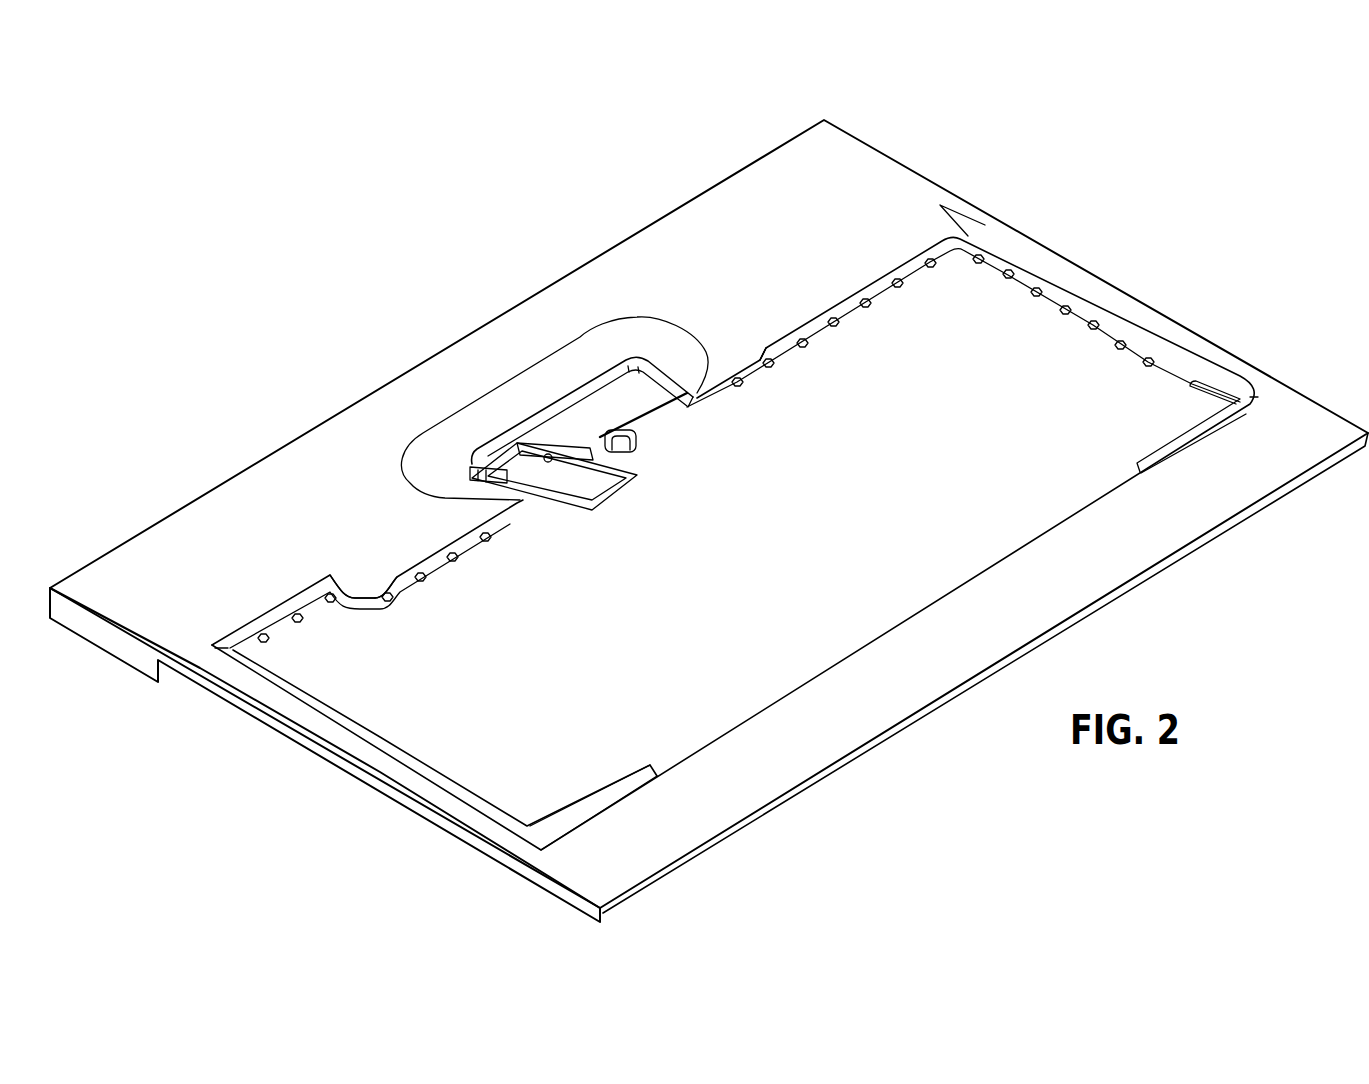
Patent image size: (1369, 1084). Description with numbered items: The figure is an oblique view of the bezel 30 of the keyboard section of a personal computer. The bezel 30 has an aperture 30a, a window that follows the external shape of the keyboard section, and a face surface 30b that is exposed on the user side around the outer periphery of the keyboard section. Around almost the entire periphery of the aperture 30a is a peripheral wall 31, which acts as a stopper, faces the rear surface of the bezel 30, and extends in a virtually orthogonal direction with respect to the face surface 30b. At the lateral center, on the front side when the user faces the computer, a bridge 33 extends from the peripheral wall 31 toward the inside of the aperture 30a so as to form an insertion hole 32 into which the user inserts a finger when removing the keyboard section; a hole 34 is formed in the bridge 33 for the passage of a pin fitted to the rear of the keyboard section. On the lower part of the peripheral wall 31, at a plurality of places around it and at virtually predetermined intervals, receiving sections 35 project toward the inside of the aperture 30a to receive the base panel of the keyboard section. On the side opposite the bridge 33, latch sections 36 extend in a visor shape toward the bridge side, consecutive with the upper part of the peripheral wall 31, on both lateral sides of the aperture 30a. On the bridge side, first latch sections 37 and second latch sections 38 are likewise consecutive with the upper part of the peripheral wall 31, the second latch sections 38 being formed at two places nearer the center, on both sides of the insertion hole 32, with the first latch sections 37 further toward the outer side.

The bezel 30 is at (858, 154).
The aperture 30a is at (878, 640).
The face surface 30b is at (683, 223).
The peripheral wall 31 is at (717, 390).
The insertion hole 32 is at (567, 433).
The bridge 33 is at (663, 413).
The hole 34 is at (607, 425).
The receiving sections 35 is at (928, 265).
The latch sections 36 is at (1137, 470).
The first latch sections 37 is at (893, 288).
The second latch sections 38 is at (755, 368).